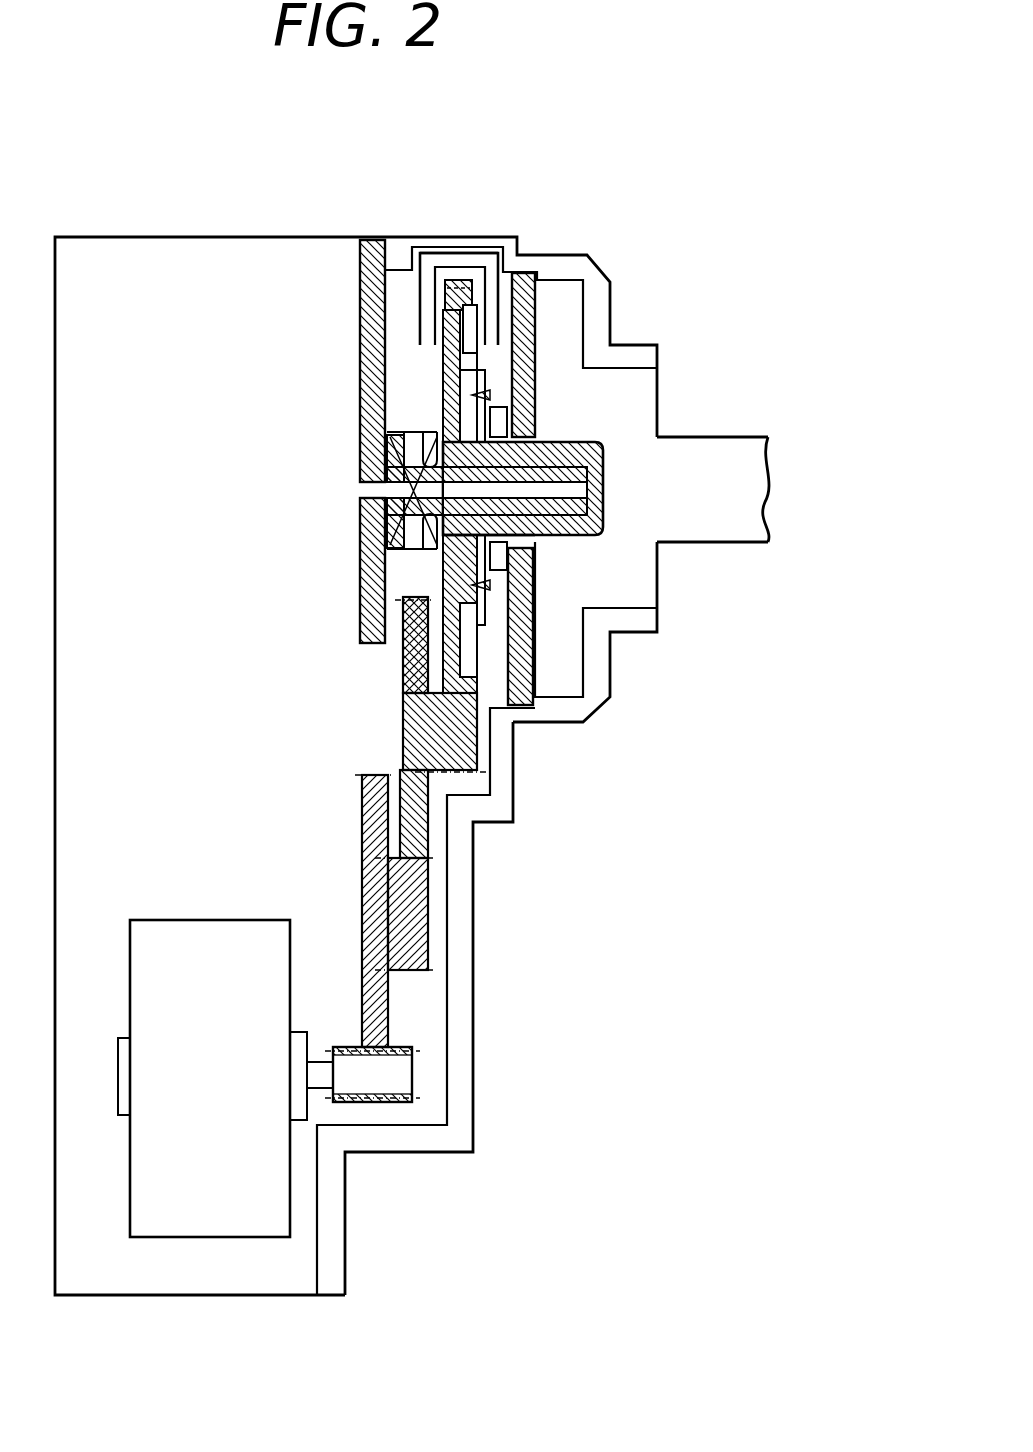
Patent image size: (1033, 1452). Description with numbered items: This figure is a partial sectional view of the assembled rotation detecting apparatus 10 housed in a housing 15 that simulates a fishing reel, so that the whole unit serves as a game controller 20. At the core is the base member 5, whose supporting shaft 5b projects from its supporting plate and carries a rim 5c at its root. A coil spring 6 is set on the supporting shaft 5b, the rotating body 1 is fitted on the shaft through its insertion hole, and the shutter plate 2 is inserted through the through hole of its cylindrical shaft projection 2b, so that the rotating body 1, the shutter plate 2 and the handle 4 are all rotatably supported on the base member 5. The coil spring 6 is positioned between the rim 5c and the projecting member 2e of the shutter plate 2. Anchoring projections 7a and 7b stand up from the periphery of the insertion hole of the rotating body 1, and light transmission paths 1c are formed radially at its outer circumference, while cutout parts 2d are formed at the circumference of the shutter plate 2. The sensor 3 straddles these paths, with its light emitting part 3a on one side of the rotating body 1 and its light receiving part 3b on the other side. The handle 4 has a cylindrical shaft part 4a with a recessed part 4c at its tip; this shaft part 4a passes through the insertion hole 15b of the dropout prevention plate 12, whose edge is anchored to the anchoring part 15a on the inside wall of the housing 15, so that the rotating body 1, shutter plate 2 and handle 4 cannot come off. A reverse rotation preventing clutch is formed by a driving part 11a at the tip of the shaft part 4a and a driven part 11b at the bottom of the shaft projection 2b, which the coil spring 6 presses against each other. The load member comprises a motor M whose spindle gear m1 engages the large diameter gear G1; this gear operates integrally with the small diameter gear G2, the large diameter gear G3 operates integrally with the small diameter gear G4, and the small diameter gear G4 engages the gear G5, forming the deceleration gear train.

The rotating body 1 is at (440, 640).
The light transmission paths 1c is at (455, 328).
The shutter plate 2 is at (488, 627).
The shaft projection 2b is at (586, 546).
The cutout parts 2d is at (480, 322).
The projecting member 2e is at (392, 552).
The sensor 3 is at (417, 302).
The light emitting part 3a is at (436, 335).
The light receiving part 3b is at (506, 253).
The handle 4 is at (739, 432).
The shaft part 4a is at (748, 522).
The recessed part 4c is at (606, 463).
The base member 5 is at (375, 240).
The supporting shaft 5b is at (592, 506).
The rim 5c is at (388, 516).
The coil spring 6 is at (413, 560).
The anchoring projection 7a is at (528, 346).
The anchoring projection 7b is at (533, 587).
The rotation detecting apparatus 10 is at (276, 446).
The driving part 11a is at (492, 412).
The driven part 11b is at (484, 398).
The dropout prevention plate 12 is at (480, 665).
The housing 15 is at (604, 266).
The anchoring part 15a is at (552, 707).
The insertion hole 15b is at (545, 548).
The game controller 20 is at (565, 178).
The large diameter gear G1 is at (384, 774).
The small diameter gear G2 is at (418, 974).
The large diameter gear G3 is at (403, 617).
The small diameter gear G4 is at (462, 775).
The gear G5 is at (459, 280).
The motor M is at (206, 920).
The gear m1 is at (345, 1047).